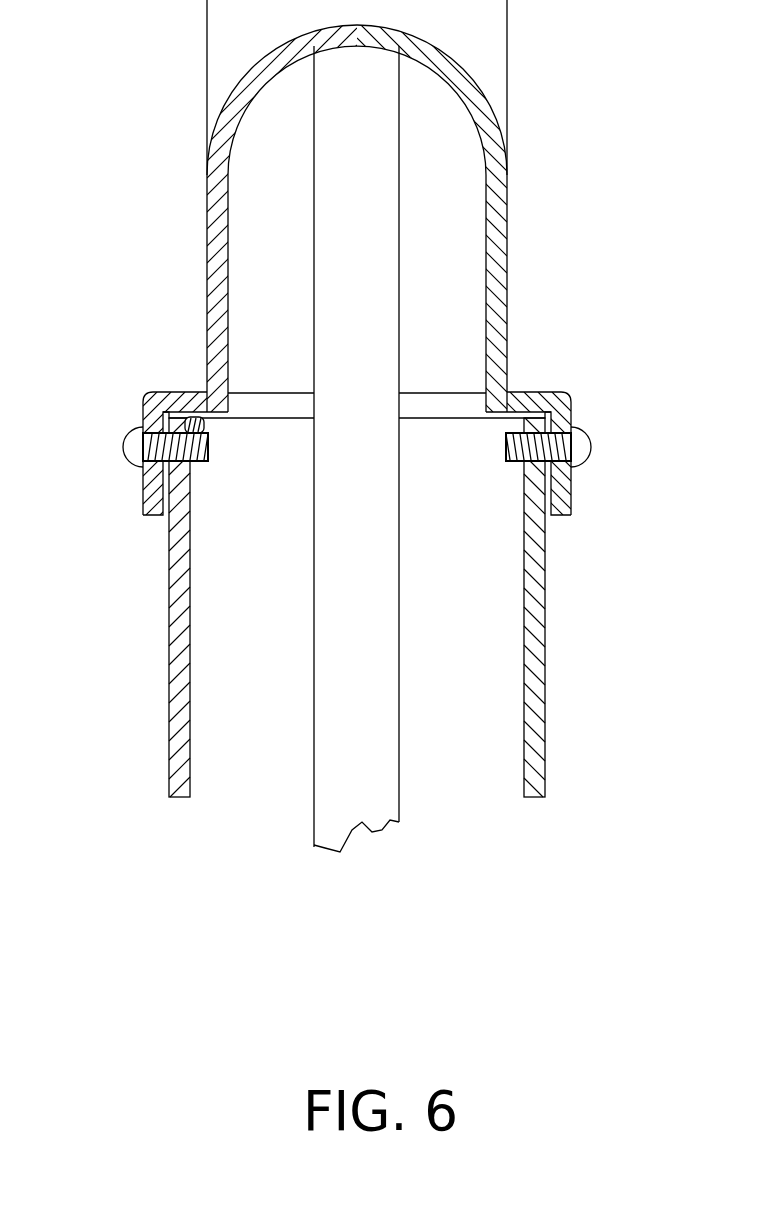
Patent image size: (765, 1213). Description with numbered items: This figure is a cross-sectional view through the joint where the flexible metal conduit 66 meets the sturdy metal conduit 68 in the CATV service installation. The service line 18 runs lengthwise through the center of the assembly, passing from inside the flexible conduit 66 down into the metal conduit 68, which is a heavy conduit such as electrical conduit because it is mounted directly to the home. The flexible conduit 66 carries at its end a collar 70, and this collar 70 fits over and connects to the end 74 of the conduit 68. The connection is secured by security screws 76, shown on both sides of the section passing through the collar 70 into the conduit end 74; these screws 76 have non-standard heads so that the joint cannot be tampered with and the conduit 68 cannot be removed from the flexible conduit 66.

The flexible metal conduit 66 is at (509, 44).
The service line 18 is at (400, 206).
The collar 70 is at (527, 393).
The end of conduit 74 is at (190, 413).
The security screws 76 is at (124, 441).
The metal conduit 68 is at (170, 657).